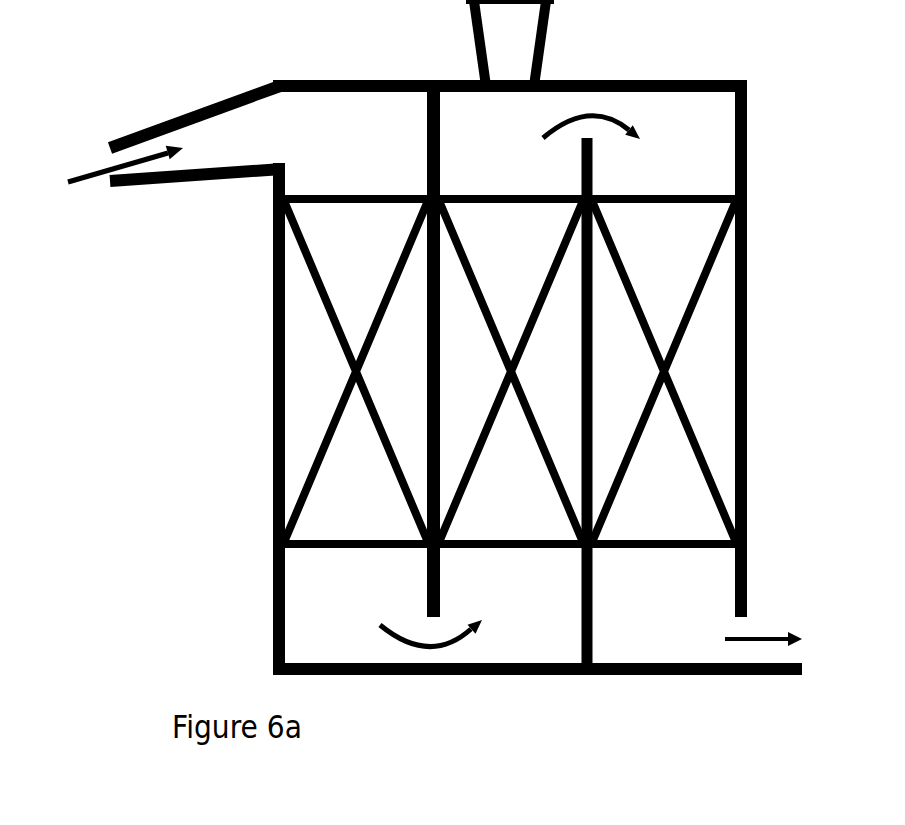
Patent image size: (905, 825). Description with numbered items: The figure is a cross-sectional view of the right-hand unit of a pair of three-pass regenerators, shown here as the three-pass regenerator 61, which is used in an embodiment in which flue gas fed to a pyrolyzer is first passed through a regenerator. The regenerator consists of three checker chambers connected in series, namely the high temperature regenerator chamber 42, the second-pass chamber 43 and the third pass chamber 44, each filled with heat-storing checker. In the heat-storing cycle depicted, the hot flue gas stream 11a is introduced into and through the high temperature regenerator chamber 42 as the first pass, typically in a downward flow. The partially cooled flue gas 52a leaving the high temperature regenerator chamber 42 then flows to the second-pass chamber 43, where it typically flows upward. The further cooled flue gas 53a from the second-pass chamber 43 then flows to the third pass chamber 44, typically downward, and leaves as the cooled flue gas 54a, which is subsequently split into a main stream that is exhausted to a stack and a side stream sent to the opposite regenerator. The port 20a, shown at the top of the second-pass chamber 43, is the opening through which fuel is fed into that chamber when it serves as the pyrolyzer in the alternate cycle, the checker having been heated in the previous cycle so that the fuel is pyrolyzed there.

The hot flue gas stream 11a is at (106, 171).
The port 20a is at (510, 43).
The high temperature regenerator chamber 42 is at (356, 344).
The second-pass chamber 43 is at (511, 345).
The third pass chamber 44 is at (664, 345).
The partially cooled flue gas 52a is at (431, 633).
The further cooled flue gas 53a is at (592, 118).
The cooled flue gas 54a is at (771, 629).
The three-pass regenerator 61 is at (273, 307).